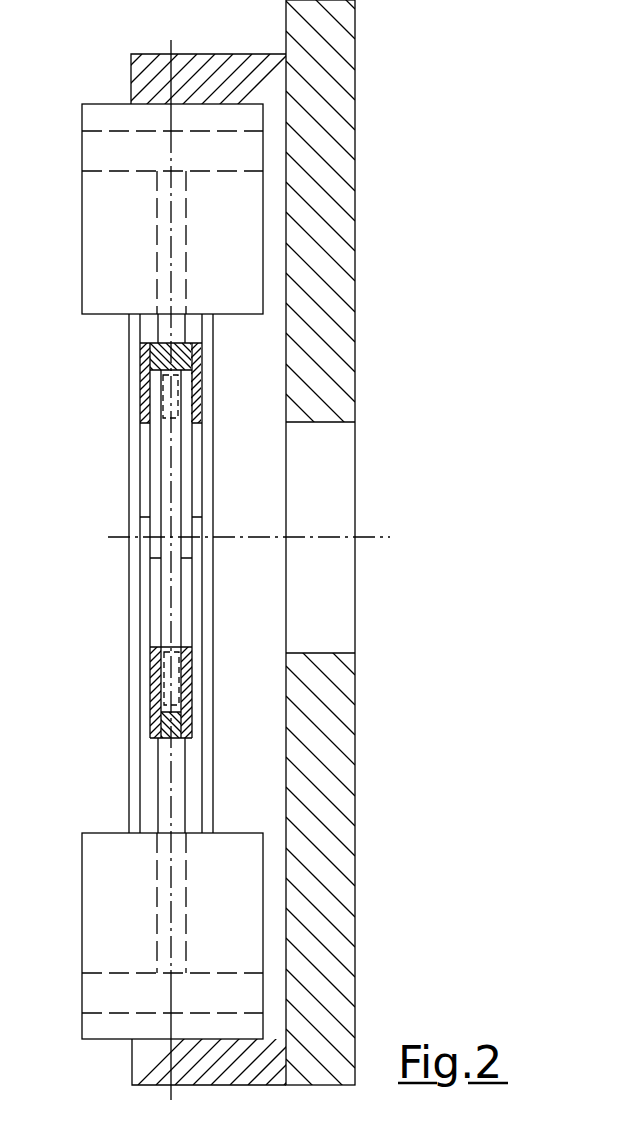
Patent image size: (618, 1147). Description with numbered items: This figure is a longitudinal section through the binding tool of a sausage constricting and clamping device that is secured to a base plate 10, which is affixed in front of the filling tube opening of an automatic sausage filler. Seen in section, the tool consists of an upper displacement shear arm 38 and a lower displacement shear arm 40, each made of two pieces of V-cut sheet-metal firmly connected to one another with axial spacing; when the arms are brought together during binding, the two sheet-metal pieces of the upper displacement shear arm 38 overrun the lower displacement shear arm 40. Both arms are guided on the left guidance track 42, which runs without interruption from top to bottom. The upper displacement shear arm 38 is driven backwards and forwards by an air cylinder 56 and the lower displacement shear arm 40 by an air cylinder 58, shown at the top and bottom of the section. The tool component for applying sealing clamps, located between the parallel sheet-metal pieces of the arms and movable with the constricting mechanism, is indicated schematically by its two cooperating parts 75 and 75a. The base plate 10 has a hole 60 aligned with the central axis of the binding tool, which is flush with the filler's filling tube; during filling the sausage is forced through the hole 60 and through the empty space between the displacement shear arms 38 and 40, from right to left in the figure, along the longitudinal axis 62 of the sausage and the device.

The base plate 10 is at (347, 194).
The upper displacement shear arm 38 is at (143, 363).
The lower displacement shear arm 40 is at (152, 676).
The left guidance track 42 is at (128, 465).
The air cylinder 56 is at (89, 191).
The air cylinder 58 is at (93, 873).
The hole 60 is at (346, 448).
The longitudinal axis 62 is at (355, 537).
The tool component for application of sealing clamps 75 is at (178, 388).
The tool component for application of sealing clamps 75a is at (180, 674).